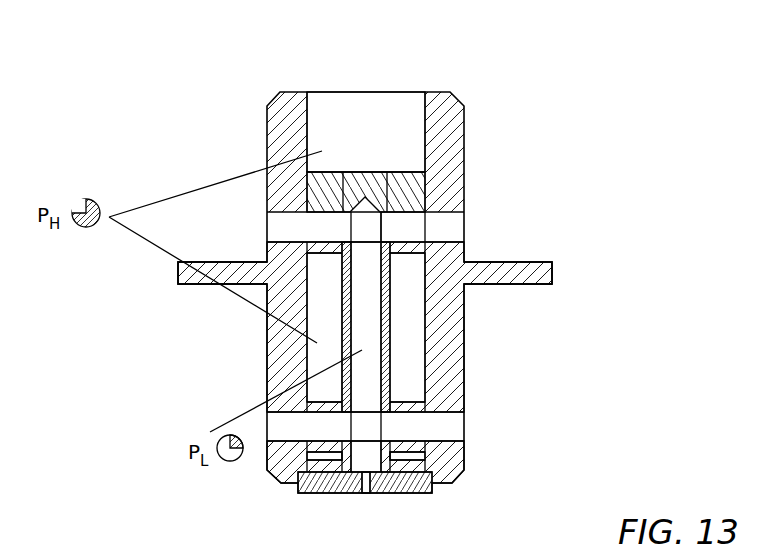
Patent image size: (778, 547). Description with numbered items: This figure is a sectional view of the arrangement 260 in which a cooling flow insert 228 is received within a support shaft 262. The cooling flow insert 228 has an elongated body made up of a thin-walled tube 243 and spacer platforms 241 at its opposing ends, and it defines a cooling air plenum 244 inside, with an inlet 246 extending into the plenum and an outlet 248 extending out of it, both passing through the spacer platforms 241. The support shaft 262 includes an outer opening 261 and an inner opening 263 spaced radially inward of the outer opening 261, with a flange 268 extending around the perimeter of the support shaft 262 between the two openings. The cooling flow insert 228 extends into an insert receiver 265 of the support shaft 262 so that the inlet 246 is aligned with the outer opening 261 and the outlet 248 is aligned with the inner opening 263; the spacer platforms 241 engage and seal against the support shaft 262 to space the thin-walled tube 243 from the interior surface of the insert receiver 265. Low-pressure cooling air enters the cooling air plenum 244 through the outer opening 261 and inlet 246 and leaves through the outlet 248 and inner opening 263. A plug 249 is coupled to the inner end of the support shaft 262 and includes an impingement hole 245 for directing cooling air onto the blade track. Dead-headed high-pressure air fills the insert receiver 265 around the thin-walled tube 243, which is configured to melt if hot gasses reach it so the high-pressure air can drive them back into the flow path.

The valve assembly 260 is at (543, 98).
The support shaft 262 is at (467, 166).
The insert receiver 265 is at (402, 114).
The spacer platforms 241 is at (412, 196).
The cooling flow insert 228 is at (354, 158).
The outer opening 261 is at (440, 232).
The inlet 246 is at (398, 230).
The thin-walled tube 243 is at (404, 332).
The flange 268 is at (541, 261).
The cooling air plenum 244 is at (370, 295).
The inner opening 263 is at (444, 428).
The outlet 248 is at (406, 432).
The plug 249 is at (411, 493).
The impingement hole 245 is at (360, 477).